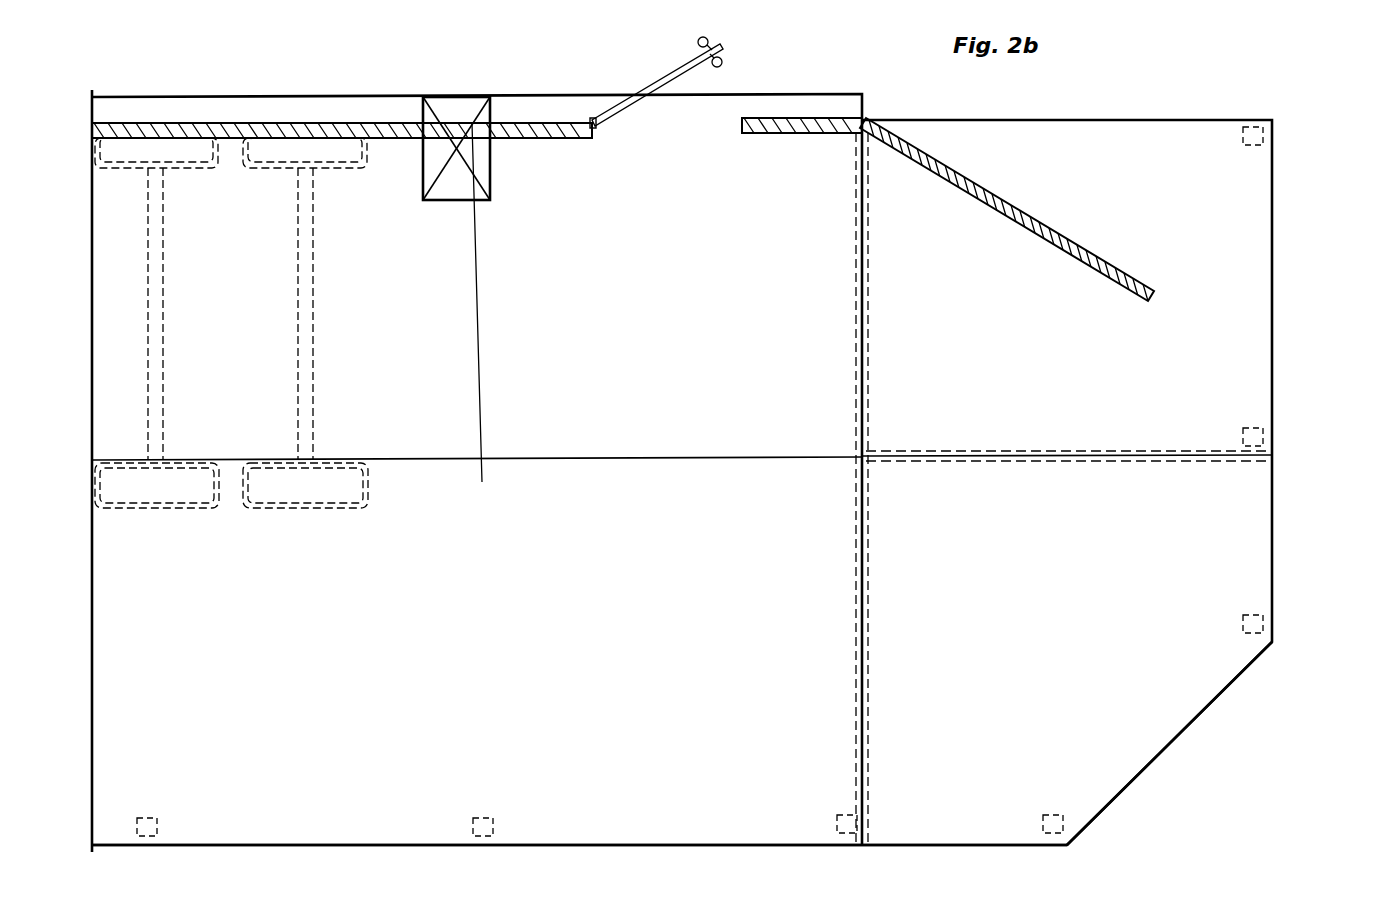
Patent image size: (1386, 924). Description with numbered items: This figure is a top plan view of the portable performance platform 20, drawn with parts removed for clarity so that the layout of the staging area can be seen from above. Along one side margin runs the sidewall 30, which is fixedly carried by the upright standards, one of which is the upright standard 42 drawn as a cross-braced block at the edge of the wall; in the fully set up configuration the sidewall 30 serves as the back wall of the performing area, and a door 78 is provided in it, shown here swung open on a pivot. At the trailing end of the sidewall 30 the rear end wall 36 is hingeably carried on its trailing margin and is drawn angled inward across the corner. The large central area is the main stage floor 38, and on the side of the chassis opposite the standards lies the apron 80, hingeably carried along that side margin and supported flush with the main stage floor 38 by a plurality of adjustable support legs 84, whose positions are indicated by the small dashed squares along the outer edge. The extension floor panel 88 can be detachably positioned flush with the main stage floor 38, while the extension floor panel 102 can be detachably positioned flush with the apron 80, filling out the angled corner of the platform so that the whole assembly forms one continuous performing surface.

The portable performance platform 20 is at (440, 853).
The sidewall 30 is at (278, 127).
The rear end wall 36 is at (1036, 215).
The main stage floor 38 is at (655, 223).
The upright standard 42 is at (458, 113).
The door 78 is at (658, 80).
The apron 80 is at (732, 810).
The adjustable support leg 84 is at (152, 835).
The extension floor panel 88 is at (1192, 327).
The extension floor panel 102 is at (1133, 720).